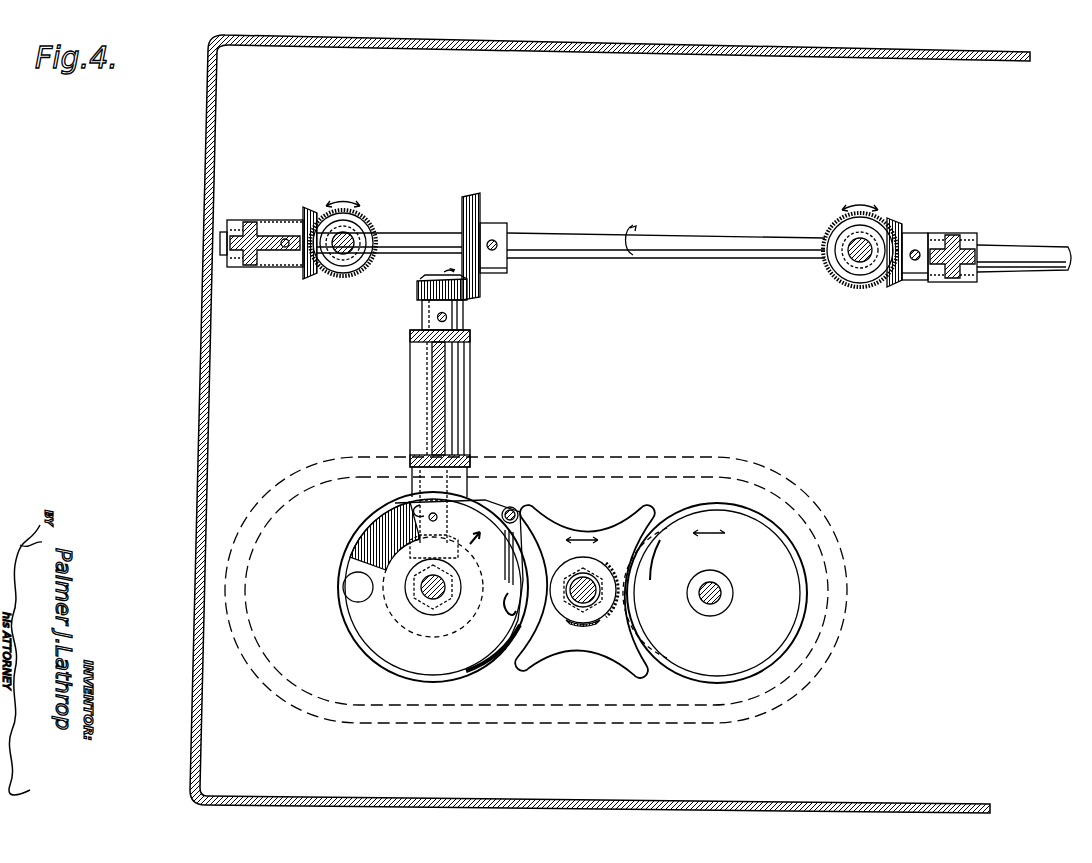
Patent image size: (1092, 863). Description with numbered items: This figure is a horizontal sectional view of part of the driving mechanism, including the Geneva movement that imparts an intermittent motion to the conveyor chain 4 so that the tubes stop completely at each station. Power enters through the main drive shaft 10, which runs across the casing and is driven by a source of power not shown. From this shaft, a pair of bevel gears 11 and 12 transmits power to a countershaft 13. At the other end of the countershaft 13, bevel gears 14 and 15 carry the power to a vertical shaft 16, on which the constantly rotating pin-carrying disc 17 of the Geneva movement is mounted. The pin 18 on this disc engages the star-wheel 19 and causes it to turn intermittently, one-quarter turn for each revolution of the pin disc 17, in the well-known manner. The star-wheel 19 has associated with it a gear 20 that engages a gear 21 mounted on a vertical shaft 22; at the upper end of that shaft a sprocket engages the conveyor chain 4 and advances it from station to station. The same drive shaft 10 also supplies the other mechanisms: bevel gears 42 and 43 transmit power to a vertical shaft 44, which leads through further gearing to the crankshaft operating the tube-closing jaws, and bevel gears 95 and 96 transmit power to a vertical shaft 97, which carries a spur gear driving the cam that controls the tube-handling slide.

The conveyor chain 4 is at (726, 452).
The drive shaft 10 is at (1010, 250).
The bevel gear 11 is at (470, 200).
The bevel gear 12 is at (417, 290).
The countershaft 13 is at (421, 361).
The bevel gear 14 is at (407, 543).
The bevel gear 15 is at (411, 640).
The vertical shaft 16 is at (420, 593).
The pin-carrying disc 17 is at (477, 498).
The pin 18 is at (516, 510).
The star-wheel 19 is at (585, 530).
The gear 20 is at (590, 620).
The gear 21 is at (682, 680).
The vertical shaft 22 is at (722, 593).
The bevel gear 42 is at (895, 287).
The bevel gear 43 is at (838, 232).
The vertical shaft 44 is at (856, 262).
The bevel gear 95 is at (316, 275).
The bevel gear 96 is at (368, 226).
The vertical shaft 97 is at (346, 254).